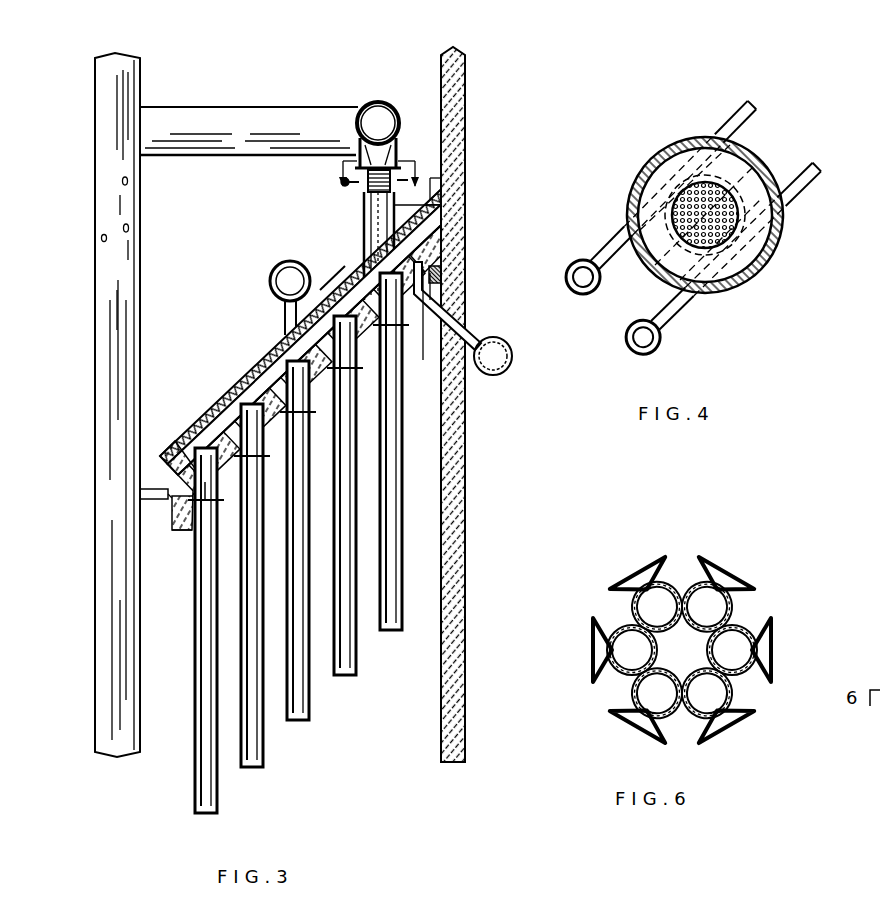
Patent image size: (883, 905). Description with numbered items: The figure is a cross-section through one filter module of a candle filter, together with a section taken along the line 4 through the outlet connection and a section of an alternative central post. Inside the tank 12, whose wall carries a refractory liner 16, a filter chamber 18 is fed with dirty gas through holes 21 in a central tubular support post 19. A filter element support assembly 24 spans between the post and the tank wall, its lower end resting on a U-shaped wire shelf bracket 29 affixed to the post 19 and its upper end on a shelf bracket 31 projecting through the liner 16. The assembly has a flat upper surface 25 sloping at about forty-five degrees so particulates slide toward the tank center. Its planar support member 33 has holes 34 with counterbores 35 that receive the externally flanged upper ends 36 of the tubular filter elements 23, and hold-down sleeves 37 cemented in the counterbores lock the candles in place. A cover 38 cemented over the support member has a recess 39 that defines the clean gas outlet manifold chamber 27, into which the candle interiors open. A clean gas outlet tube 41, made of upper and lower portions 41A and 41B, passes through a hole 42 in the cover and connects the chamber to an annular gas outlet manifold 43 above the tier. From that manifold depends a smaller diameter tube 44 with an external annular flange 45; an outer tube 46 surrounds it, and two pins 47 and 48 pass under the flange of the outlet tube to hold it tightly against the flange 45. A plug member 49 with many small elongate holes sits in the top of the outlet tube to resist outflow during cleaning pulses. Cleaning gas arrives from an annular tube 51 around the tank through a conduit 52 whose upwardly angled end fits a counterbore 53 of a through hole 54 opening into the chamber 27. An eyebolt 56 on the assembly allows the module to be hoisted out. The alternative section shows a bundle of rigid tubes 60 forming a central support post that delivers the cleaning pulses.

In FIG. 3, the tank 12 is at (466, 82).
In FIG. 3, the refractory liner 16 is at (455, 103).
In FIG. 3, the filter chamber 18 is at (204, 243).
In FIG. 3, the tubular support post 19 is at (140, 318).
In FIG. 3, the through holes 21 is at (108, 236).
In FIG. 3, the tubular filter elements 23 is at (217, 790).
In FIG. 3, the filter element support assembly 24 is at (250, 360).
In FIG. 3, the flat upper surface 25 is at (208, 417).
In FIG. 3, the clean gas outlet manifold chamber 27 is at (287, 357).
In FIG. 3, the wire shelf brackets 29 is at (155, 500).
In FIG. 6, the wire shelf brackets 29 is at (770, 620).
In FIG. 3, the shelf brackets 31 is at (463, 287).
In FIG. 3, the support member 33 is at (183, 522).
In FIG. 3, the holes 34 is at (213, 507).
In FIG. 3, the counterbores 35 is at (203, 450).
In FIG. 3, the externally flanged upper ends 36 is at (172, 495).
In FIG. 3, the hold-down sleeves 37 is at (252, 400).
In FIG. 3, the cover 38 is at (352, 265).
In FIG. 3, the recess 39 is at (332, 285).
In FIG. 3, the clean gas outlet tube 41 is at (360, 207).
In FIG. 3, the upper portion of outlet tube 41A is at (468, 192).
In FIG. 3, the lower portion of outlet tube 41B is at (392, 205).
In FIG. 3, the hole 42 is at (364, 226).
In FIG. 3, the annular gas outlet manifold 43 is at (227, 131).
In FIG. 3, the smaller diameter tubes 44 is at (375, 148).
In FIG. 3, the external annular flange 45 is at (396, 160).
In FIG. 4, the external annular flange 45 is at (737, 267).
In FIG. 3, the outer tubes 46 is at (357, 133).
In FIG. 4, the outer tubes 46 is at (777, 253).
In FIG. 4, the pin 47 is at (723, 124).
In FIG. 4, the pin 48 is at (795, 193).
In FIG. 3, the plug member 49 is at (368, 197).
In FIG. 4, the plug member 49 is at (733, 200).
In FIG. 3, the annular tube 51 is at (507, 372).
In FIG. 3, the conduits 52 is at (422, 332).
In FIG. 3, the counterbore 53 is at (440, 270).
In FIG. 3, the through hole 54 is at (432, 242).
In FIG. 3, the eyebolt 56 is at (272, 275).
In FIG. 6, the rigid tubes 60 is at (690, 587).
In FIG. 3, the section line 4- 4 is at (376, 168).